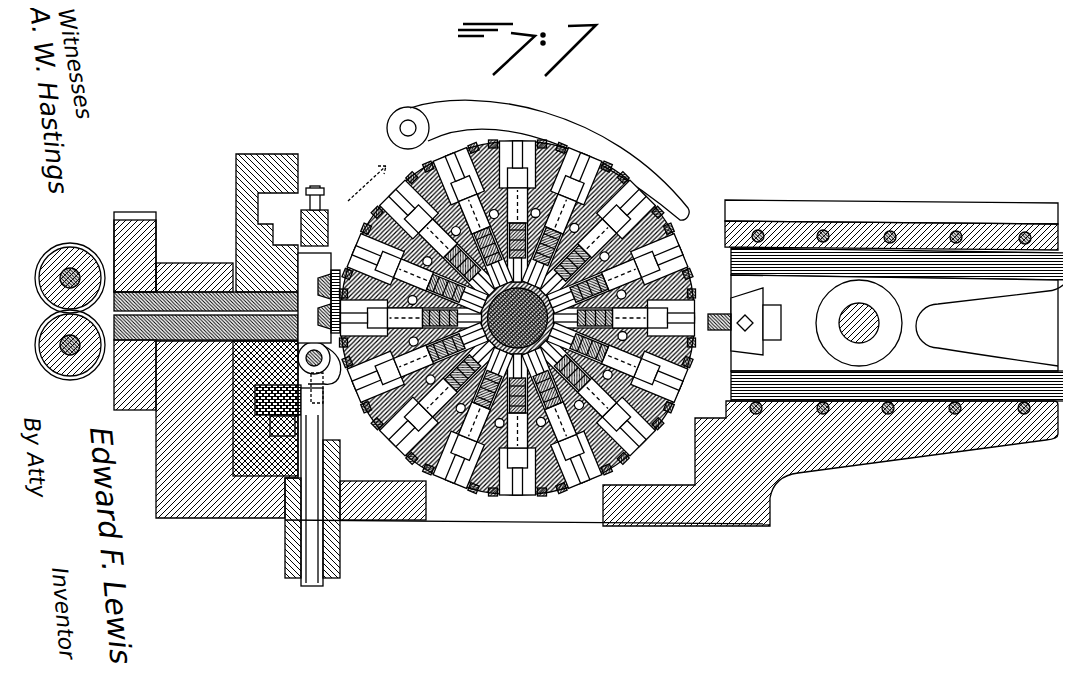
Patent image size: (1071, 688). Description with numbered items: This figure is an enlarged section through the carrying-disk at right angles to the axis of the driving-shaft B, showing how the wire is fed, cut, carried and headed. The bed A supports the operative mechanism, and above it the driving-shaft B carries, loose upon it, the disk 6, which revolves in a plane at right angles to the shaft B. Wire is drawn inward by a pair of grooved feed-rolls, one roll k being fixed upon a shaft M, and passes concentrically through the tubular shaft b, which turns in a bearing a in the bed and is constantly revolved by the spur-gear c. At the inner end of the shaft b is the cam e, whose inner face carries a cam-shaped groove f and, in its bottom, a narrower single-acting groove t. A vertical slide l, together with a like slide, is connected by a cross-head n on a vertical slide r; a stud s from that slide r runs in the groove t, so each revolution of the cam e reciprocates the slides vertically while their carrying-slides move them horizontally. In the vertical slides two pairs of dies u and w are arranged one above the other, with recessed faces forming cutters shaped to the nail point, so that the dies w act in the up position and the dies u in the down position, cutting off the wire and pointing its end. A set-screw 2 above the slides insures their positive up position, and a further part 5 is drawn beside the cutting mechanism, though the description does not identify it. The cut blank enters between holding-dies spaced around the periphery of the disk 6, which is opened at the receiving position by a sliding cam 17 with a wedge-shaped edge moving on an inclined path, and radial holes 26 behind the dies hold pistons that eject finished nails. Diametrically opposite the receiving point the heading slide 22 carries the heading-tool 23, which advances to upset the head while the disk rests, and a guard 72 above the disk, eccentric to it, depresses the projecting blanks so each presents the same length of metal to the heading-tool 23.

The bed A is at (227, 440).
The driving-shaft B is at (518, 318).
The bearing a is at (194, 268).
The shaft b is at (206, 316).
The spur-gear c is at (135, 302).
The cam e is at (267, 223).
The cam-shaped groove t is at (264, 203).
The cam-shaped groove f is at (282, 320).
The vertical slide l is at (314, 298).
The dies u is at (316, 286).
The dies w is at (315, 316).
The cross-head n is at (314, 351).
The stud s is at (278, 400).
The vertical slide r is at (312, 487).
The grooved roll k is at (59, 295).
The shaft M is at (70, 355).
The set-screw 2 is at (314, 209).
The latch 5 is at (324, 374).
The disk 6 is at (518, 218).
The sliding cam 17 is at (517, 318).
The radial holes 26 is at (518, 416).
The guard 72 is at (538, 160).
The slide 22 is at (833, 363).
The heading-tool 23 is at (743, 321).